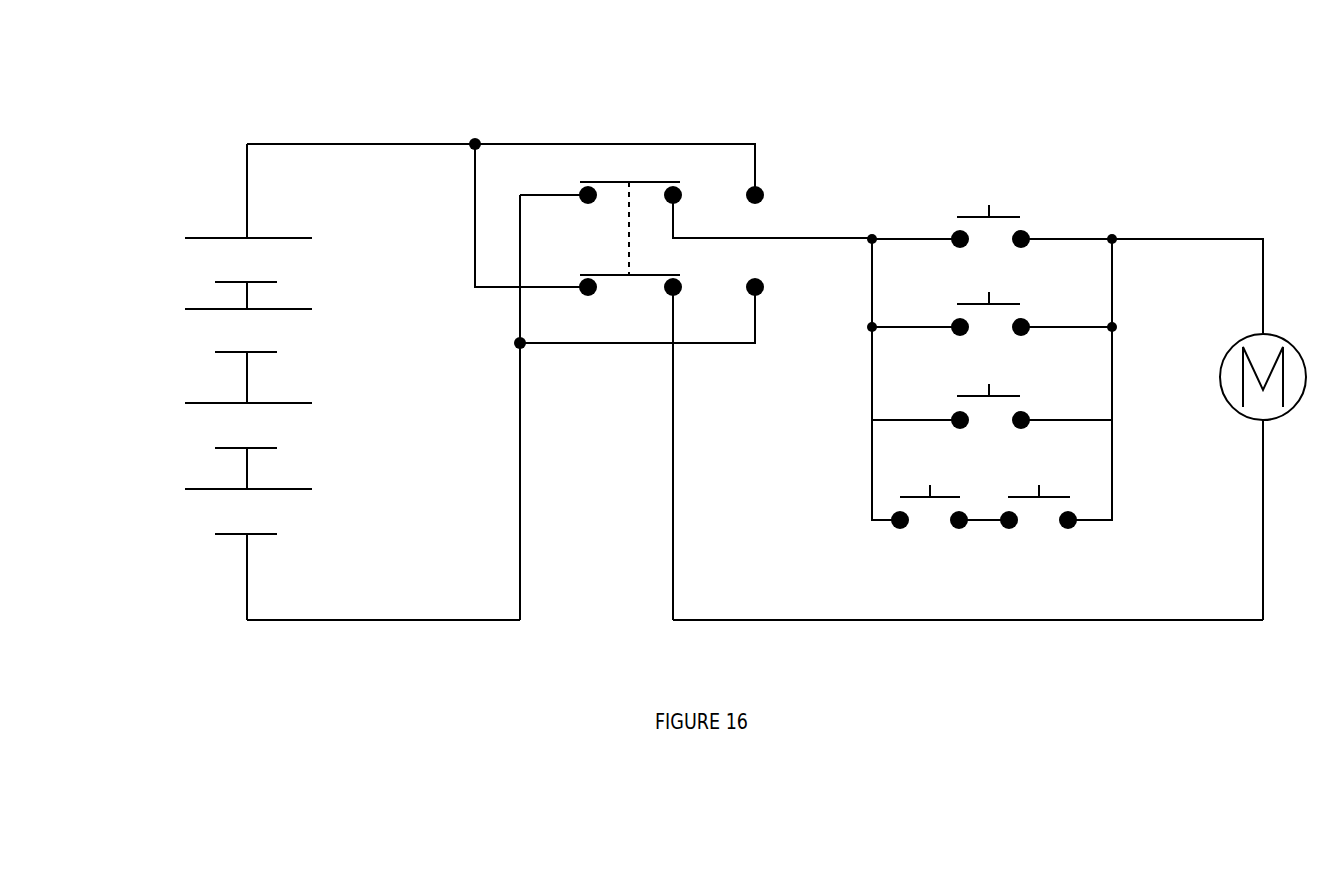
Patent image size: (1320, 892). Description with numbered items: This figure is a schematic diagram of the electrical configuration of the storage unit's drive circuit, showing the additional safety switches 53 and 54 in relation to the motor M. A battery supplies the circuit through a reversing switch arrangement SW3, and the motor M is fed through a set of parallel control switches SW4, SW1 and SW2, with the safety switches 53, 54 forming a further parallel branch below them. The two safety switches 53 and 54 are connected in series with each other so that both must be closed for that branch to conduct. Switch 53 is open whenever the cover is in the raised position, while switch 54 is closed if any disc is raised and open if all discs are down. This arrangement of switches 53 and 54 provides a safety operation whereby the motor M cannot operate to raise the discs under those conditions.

The safety switch 53 is at (929, 523).
The safety switch 54 is at (1038, 523).
The switch SW1 is at (966, 308).
The switch SW2 is at (967, 394).
The switch SW3 is at (696, 401).
The switch SW4 is at (990, 211).
The motor M is at (1263, 477).